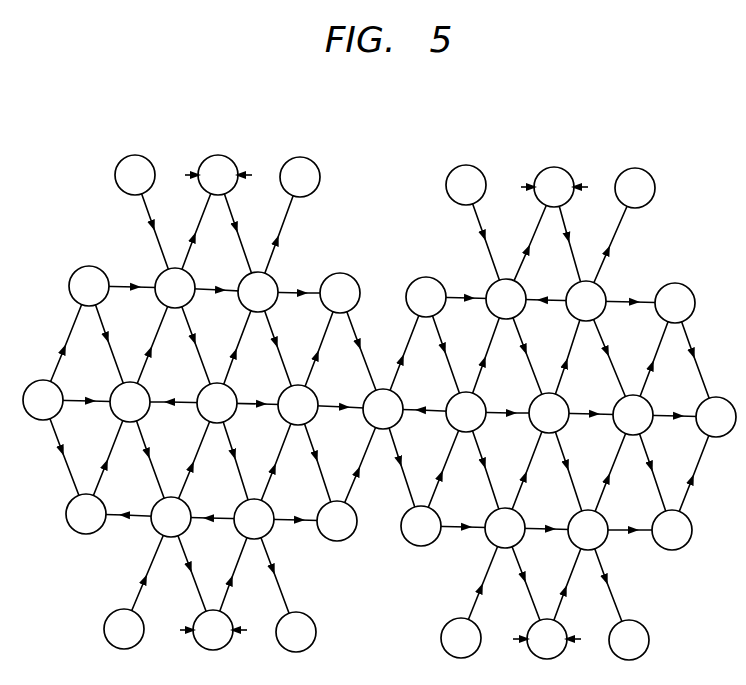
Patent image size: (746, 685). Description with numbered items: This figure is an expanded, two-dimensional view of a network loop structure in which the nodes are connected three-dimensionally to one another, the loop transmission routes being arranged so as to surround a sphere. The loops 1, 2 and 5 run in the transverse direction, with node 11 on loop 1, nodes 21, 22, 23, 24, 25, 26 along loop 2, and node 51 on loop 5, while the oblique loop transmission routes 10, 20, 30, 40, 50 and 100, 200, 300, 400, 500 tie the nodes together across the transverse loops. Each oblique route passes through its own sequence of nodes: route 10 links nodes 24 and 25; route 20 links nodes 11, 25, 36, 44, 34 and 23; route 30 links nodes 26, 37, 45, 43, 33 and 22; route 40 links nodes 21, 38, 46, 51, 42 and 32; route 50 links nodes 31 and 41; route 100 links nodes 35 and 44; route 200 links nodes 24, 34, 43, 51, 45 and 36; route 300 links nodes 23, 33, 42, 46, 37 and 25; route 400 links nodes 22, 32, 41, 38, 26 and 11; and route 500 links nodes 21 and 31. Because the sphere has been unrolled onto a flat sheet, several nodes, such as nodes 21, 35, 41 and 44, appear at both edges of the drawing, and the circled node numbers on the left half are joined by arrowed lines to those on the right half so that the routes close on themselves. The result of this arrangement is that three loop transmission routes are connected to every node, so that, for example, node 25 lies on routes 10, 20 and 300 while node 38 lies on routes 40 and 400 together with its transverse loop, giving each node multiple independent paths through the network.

The loop 1 is at (390, 172).
The loop 2 is at (644, 301).
The loop 5 is at (382, 647).
The loop transmission route 10 is at (62, 356).
The loop transmission route 20 is at (146, 360).
The loop transmission route 30 is at (231, 360).
The loop transmission route 40 is at (313, 361).
The loop transmission route 50 is at (403, 469).
The loop transmission route 100 is at (66, 463).
The loop transmission route 200 is at (156, 468).
The loop transmission route 300 is at (239, 468).
The loop transmission route 400 is at (321, 469).
The loop transmission route 500 is at (401, 357).
The node 11 is at (588, 168).
The node 21 is at (383, 295).
The node 22 is at (362, 238).
The node 23 is at (405, 238).
The node 24 is at (382, 294).
The node 25 is at (360, 238).
The node 26 is at (403, 238).
The node 31 is at (383, 409).
The node 32 is at (298, 405).
The node 33 is at (217, 403).
The node 34 is at (130, 402).
The node 35 is at (379, 408).
The node 36 is at (633, 415).
The node 37 is at (549, 413).
The node 38 is at (466, 412).
The node 41 is at (379, 523).
The node 42 is at (357, 578).
The node 43 is at (400, 578).
The node 44 is at (379, 522).
The node 45 is at (356, 579).
The node 46 is at (400, 580).
The node 51 is at (578, 664).